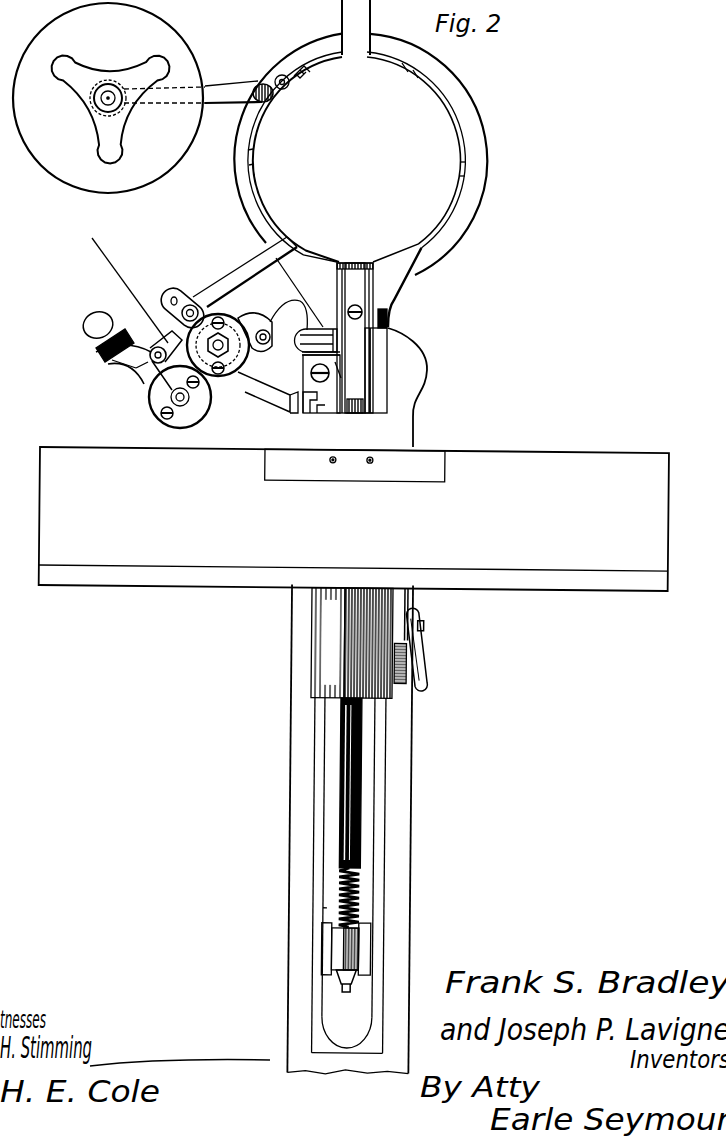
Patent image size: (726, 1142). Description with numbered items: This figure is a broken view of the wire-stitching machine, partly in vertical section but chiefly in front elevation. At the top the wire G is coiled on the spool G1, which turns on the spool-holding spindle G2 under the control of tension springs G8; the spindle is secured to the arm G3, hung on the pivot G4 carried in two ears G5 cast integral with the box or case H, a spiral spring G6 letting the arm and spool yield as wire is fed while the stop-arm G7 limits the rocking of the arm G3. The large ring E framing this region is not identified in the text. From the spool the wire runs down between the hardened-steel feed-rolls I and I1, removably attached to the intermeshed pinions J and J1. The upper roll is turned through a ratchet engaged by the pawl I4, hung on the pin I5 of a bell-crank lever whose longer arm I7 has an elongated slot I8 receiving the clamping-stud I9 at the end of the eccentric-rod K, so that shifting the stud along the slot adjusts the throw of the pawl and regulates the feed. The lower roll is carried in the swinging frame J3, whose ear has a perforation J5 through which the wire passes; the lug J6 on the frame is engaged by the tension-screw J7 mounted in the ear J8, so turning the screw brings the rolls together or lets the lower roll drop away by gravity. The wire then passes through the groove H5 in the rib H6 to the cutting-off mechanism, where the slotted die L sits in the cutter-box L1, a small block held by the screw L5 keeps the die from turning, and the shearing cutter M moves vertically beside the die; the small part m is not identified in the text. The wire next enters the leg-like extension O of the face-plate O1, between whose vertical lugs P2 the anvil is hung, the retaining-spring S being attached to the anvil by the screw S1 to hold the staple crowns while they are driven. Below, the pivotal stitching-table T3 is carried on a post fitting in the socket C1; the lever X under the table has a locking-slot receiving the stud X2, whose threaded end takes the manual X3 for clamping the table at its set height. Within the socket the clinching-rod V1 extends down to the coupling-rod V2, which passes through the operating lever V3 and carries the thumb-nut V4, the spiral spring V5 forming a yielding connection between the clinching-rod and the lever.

The spool G1 is at (108, 98).
The tension springs G8 is at (154, 60).
The spool-holding spindle G2 is at (92, 105).
The arm G3 is at (222, 85).
The pivot G4 is at (266, 84).
The ears G5 is at (285, 72).
The spiral spring G6 is at (303, 66).
The stop-arm G7 is at (306, 70).
The ring E is at (466, 175).
The face-plate O1 is at (370, 74).
The eccentric-rod K is at (245, 266).
The vertical lugs P2 is at (355, 338).
The screw S1 is at (355, 305).
The retaining-spring S is at (355, 385).
The leg-like extension O is at (378, 335).
The cutter-box L1 is at (303, 366).
The screw L5 is at (330, 377).
The shearing cutter M is at (316, 328).
The clamp lip m is at (301, 353).
The die L is at (308, 414).
The upper feed-roll I is at (218, 345).
The lower feed-roll I1 is at (180, 397).
The elongated slot I8 is at (176, 294).
The longer arm of bell-crank lever I7 is at (194, 305).
The clamping-stud I9 is at (238, 327).
The pawl I4 is at (262, 330).
The pin I5 is at (288, 311).
The wire G is at (130, 290).
The box or case H is at (151, 333).
The pinion J is at (166, 360).
The tension-screw J7 is at (84, 323).
The ear J8 is at (100, 350).
The lug J6 is at (126, 372).
The swinging frame J3 is at (149, 382).
The perforation J5 is at (150, 390).
The pinion J1 is at (162, 410).
The groove H5 is at (258, 400).
The rib H6 is at (232, 404).
The stitching-table T3 is at (354, 519).
The socket C1 is at (312, 625).
The clinching-rod V1 is at (340, 805).
The spiral spring V5 is at (341, 880).
The coupling-rod V2 is at (326, 908).
The operating lever V3 is at (352, 947).
The thumb-nut V4 is at (340, 977).
The lever X is at (410, 602).
The stud X2 is at (424, 623).
The manual X3 is at (423, 657).